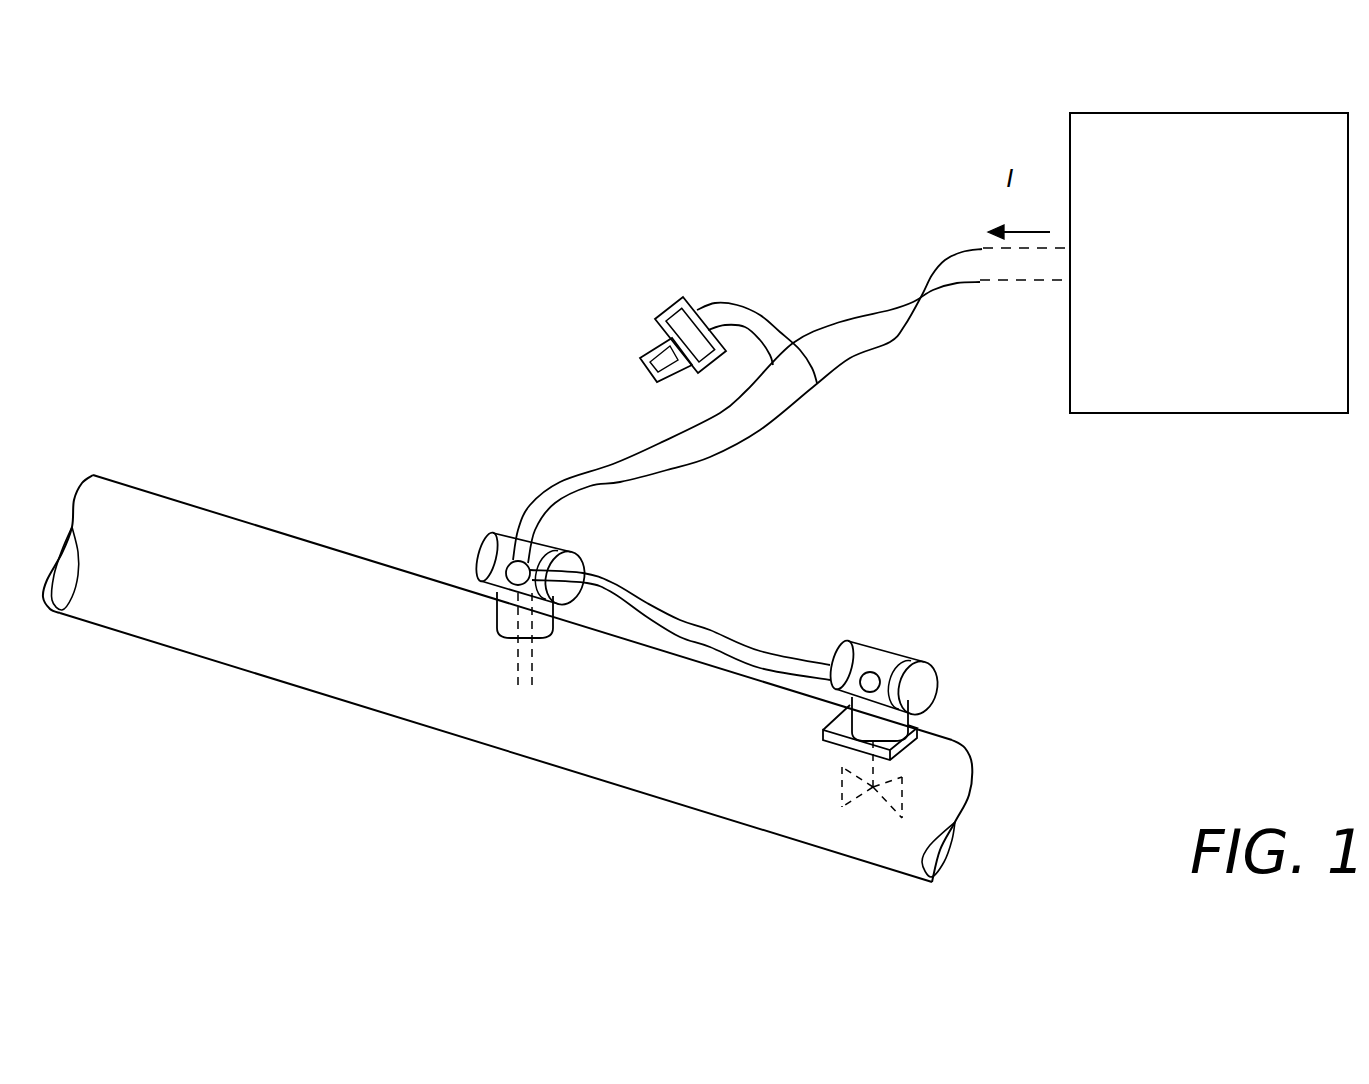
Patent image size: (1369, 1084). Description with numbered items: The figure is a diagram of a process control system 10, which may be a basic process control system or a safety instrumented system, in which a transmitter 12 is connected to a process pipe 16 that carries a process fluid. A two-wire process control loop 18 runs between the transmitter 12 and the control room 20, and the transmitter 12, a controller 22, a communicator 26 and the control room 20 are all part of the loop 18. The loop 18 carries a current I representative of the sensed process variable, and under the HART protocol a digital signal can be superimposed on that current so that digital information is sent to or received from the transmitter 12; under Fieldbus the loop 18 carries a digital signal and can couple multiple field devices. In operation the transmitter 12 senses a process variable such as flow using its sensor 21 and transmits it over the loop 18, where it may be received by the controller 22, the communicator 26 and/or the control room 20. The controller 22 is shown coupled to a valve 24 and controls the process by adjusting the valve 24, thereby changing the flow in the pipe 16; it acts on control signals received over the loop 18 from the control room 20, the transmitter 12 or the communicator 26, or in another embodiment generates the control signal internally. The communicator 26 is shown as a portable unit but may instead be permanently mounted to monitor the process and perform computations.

The process control system 10 is at (436, 263).
The transmitter 12 is at (507, 548).
The process pipe 16 is at (303, 690).
The two-wire process control loop 18 is at (614, 465).
The control room 20 is at (1118, 415).
The sensor 21 is at (533, 660).
The controller 22 is at (888, 663).
The valve 24 is at (838, 790).
The communicator 26 is at (683, 297).